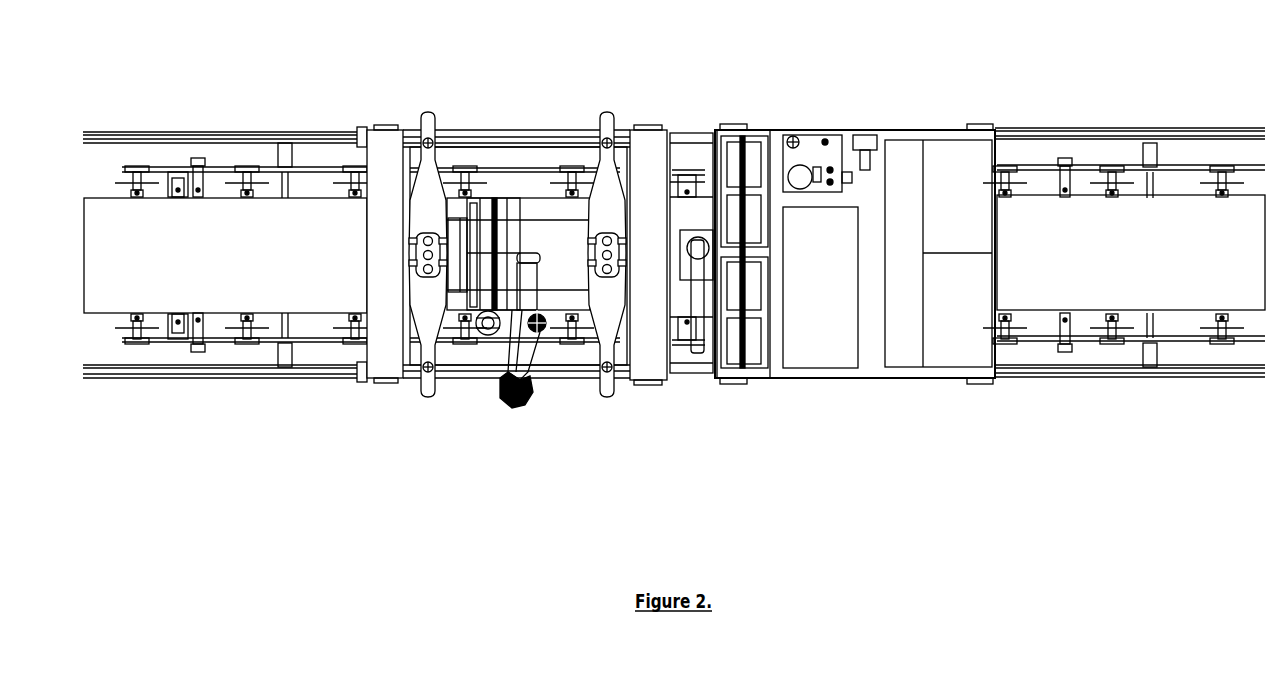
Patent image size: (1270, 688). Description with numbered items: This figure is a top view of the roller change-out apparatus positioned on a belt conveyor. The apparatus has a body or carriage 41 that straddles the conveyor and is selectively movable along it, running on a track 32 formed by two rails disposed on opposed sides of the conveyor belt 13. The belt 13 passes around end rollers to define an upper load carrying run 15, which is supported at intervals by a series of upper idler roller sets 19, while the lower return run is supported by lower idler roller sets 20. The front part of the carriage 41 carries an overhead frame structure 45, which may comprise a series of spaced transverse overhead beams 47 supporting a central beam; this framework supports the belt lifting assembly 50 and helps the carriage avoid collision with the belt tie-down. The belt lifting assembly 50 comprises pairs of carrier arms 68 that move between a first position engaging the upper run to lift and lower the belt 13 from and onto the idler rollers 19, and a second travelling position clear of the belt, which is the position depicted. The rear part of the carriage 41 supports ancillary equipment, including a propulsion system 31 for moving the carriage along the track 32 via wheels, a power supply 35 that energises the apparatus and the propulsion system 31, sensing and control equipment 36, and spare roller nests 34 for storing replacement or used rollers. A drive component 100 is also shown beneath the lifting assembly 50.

The conveyor belt 13 is at (168, 260).
The upper load carrying run 15 is at (1185, 266).
The upper idler roller sets 19 is at (252, 175).
The lower idler roller sets 20 is at (1062, 178).
The propulsion system 31 is at (806, 135).
The track 32 is at (1120, 135).
The spare roller nests 34 is at (747, 110).
The power supply 35 is at (975, 212).
The sensing and control equipment 36 is at (835, 300).
The body or carriage 41 is at (367, 428).
The overhead frame structure 45 is at (645, 145).
The transverse overhead beams 47 is at (573, 297).
The belt lifting assembly 50 is at (544, 250).
The carrier arms 68 is at (428, 318).
The drive unit 100 is at (510, 405).